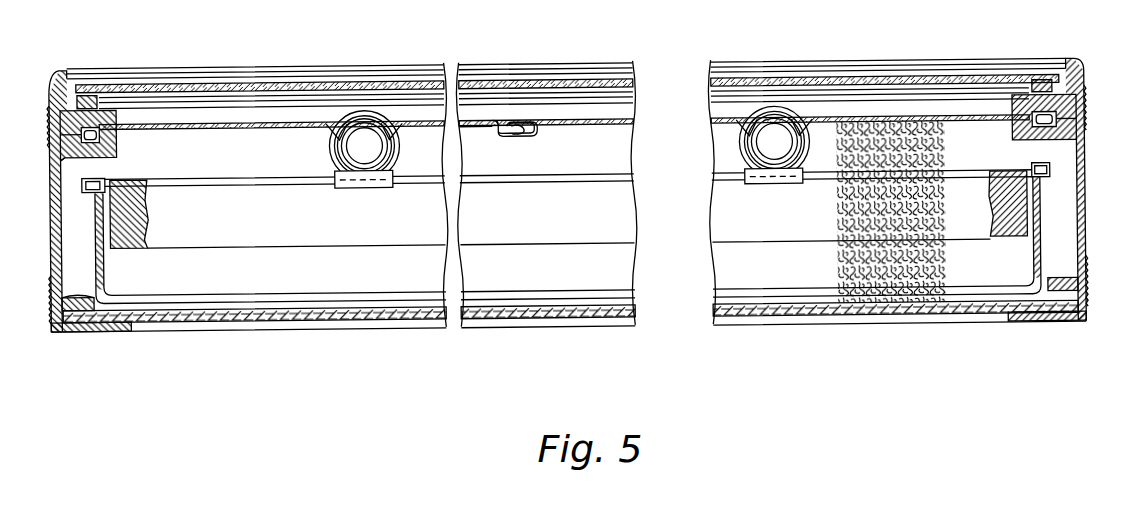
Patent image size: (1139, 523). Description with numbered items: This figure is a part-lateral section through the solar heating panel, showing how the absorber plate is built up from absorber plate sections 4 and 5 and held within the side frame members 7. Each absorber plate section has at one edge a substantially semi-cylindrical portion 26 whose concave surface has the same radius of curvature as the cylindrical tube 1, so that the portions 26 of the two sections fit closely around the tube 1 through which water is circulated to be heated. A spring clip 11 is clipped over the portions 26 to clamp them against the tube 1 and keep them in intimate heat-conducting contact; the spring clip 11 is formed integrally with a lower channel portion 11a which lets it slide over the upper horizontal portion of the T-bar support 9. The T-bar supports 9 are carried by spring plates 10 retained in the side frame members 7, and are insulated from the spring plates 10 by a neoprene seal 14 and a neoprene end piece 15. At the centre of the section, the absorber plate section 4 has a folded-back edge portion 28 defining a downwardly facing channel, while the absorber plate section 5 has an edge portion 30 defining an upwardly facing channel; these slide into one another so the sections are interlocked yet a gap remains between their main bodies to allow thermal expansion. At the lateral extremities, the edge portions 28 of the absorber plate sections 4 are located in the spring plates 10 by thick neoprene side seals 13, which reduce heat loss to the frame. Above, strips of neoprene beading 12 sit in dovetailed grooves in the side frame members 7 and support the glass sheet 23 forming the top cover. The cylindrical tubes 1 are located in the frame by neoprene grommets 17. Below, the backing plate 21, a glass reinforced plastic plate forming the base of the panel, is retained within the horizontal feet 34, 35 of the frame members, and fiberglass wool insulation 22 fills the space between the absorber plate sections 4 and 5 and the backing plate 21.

The cylindrical tube 1 is at (360, 160).
The absorber plate section 4 is at (220, 131).
The absorber plate section 5 is at (478, 124).
The side frame member 7 is at (57, 92).
The T-bar support 9 is at (258, 178).
The spring plate 10 is at (101, 276).
The spring clip 11 is at (398, 133).
The lower channel portion 11a is at (378, 190).
The neoprene beading 12 is at (88, 95).
The neoprene side seal 13 is at (111, 141).
The neoprene seal 14 is at (82, 193).
The neoprene end piece 15 is at (105, 236).
The neoprene grommet 17 is at (358, 118).
The backing plate 21 is at (237, 323).
The fiberglass wool insulation 22 is at (837, 266).
The glass sheet 23 is at (197, 92).
The substantially semi-cylindrical portion 26 is at (338, 166).
The edge portion 28 is at (82, 134).
The edge portion 30 is at (524, 144).
The horizontal foot 34 is at (107, 324).
The horizontal foot 35 is at (77, 297).